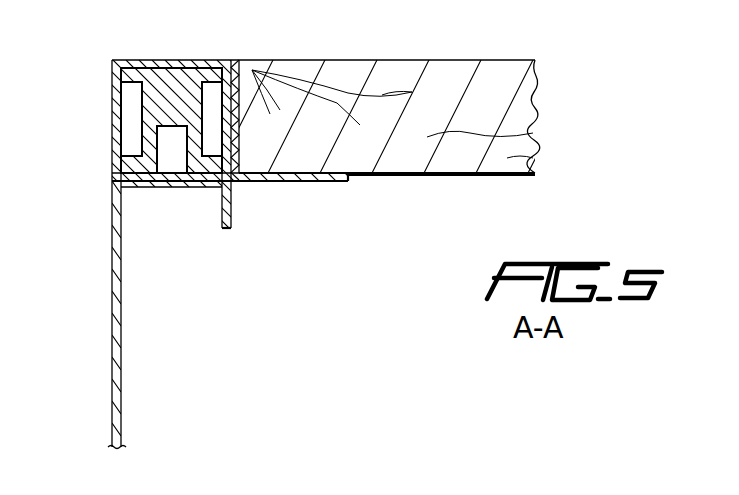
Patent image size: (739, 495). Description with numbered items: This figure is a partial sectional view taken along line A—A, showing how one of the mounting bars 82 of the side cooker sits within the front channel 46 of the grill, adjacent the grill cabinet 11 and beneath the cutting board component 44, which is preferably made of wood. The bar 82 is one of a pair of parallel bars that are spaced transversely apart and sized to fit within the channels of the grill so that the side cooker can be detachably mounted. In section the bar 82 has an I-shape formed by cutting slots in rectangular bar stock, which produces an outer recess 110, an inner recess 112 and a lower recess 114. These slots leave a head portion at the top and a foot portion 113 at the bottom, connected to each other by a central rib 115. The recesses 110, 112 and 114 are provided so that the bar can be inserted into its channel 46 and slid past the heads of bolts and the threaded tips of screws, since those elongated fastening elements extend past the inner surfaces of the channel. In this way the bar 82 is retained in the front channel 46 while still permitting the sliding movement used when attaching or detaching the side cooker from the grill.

The grill cabinet 11 is at (131, 67).
The cutting board component 44 is at (361, 73).
The front channel 46 is at (157, 67).
The bar 82 is at (187, 72).
The outer recess 110 is at (125, 113).
The inner recess 112 is at (214, 142).
The foot portion 113 is at (130, 150).
The lower recess 114 is at (174, 163).
The central rib 115 is at (147, 95).